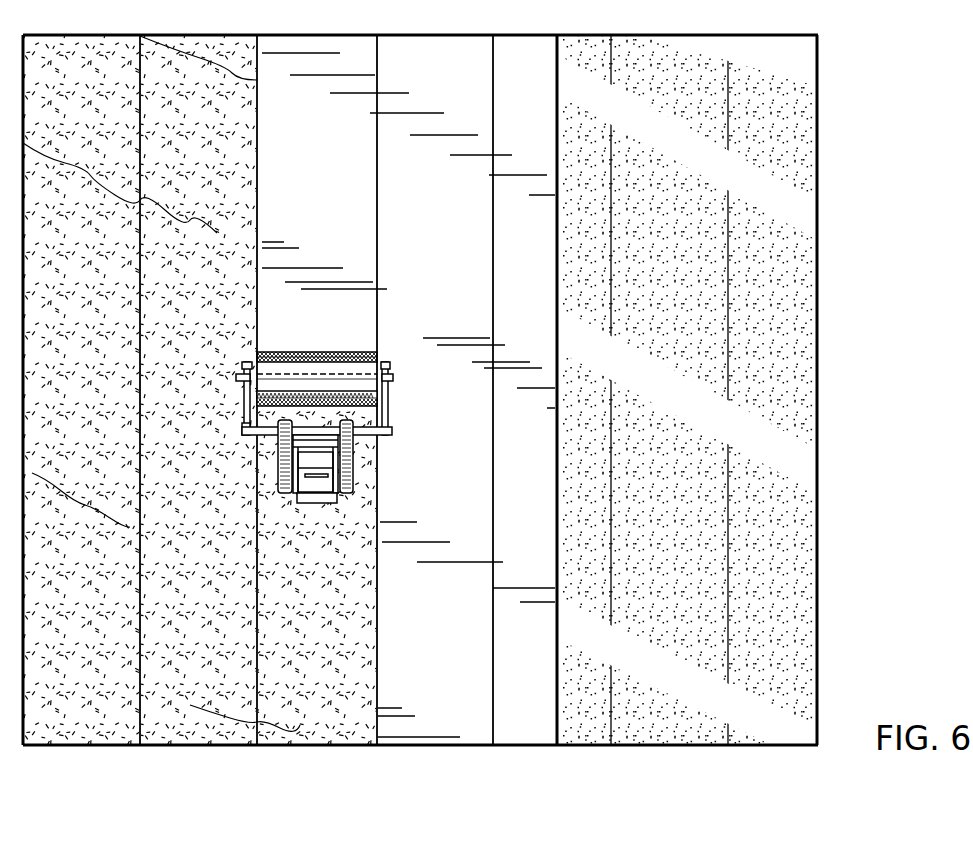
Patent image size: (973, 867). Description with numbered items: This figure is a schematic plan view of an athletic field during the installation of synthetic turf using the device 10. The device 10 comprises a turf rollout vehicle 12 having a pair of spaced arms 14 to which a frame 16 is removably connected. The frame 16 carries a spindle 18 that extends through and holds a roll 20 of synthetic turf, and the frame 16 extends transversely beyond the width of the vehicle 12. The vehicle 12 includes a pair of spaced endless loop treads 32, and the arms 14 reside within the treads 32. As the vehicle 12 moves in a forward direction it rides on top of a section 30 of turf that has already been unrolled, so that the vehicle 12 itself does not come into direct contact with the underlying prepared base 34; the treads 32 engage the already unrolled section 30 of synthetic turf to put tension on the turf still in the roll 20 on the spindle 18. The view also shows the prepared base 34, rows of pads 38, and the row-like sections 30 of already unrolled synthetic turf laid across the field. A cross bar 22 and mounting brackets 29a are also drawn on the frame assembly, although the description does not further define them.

The pipe cleaning apparatus 10 is at (319, 414).
The vehicle body 12 is at (325, 466).
The tracks 14 is at (282, 440).
The support frame 16 is at (242, 410).
The lower brush roller 18 is at (353, 372).
The upper brush roller 20 is at (303, 352).
The cross bar 22 is at (389, 435).
The roller mounting brackets 29a is at (243, 366).
The sediment / rock formation 30 is at (96, 369).
The drive sprocket 32 is at (280, 470).
The gravel / aggregate layer 34 is at (671, 392).
The water / fluid 38 is at (329, 212).